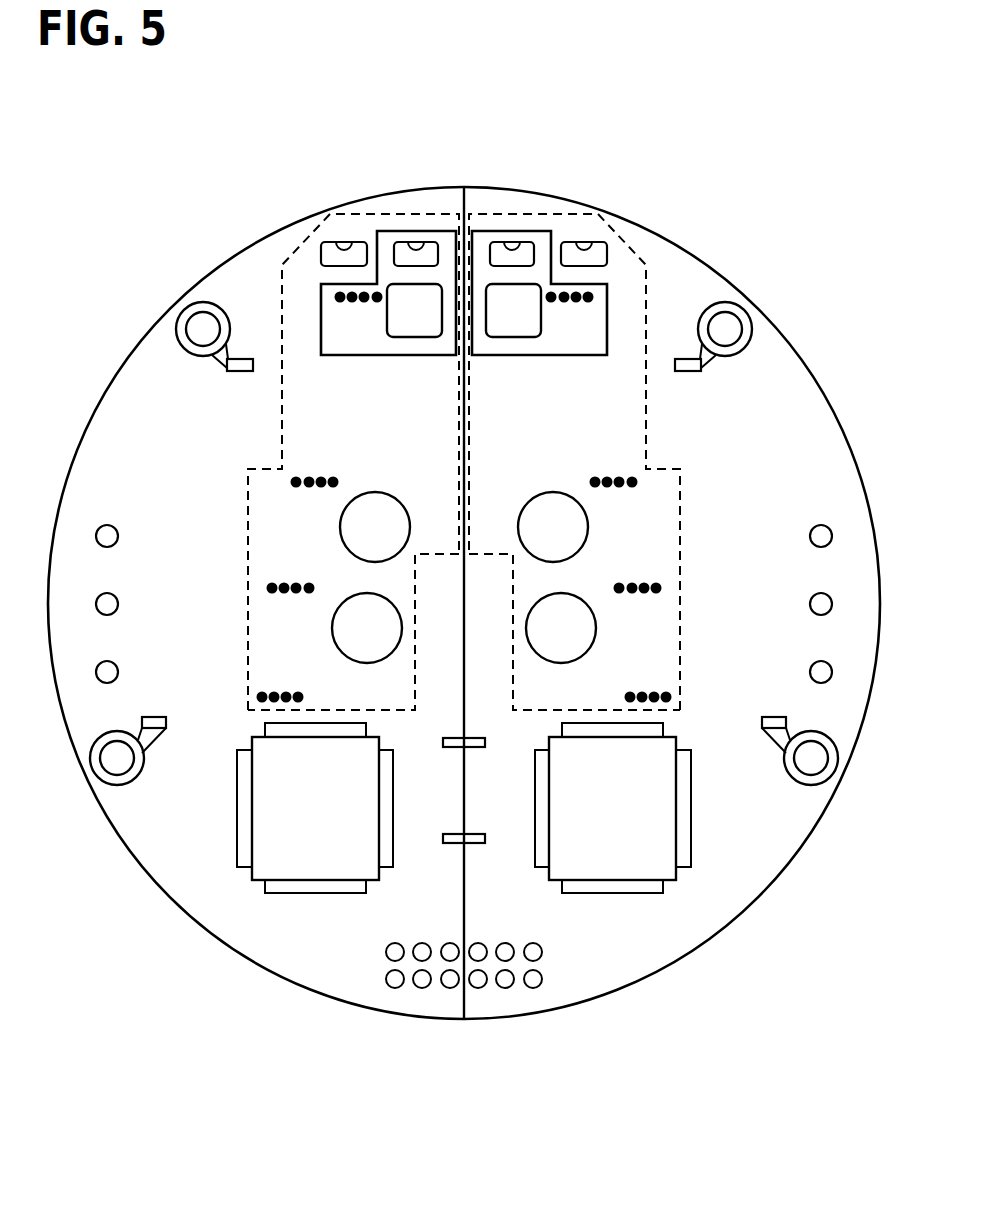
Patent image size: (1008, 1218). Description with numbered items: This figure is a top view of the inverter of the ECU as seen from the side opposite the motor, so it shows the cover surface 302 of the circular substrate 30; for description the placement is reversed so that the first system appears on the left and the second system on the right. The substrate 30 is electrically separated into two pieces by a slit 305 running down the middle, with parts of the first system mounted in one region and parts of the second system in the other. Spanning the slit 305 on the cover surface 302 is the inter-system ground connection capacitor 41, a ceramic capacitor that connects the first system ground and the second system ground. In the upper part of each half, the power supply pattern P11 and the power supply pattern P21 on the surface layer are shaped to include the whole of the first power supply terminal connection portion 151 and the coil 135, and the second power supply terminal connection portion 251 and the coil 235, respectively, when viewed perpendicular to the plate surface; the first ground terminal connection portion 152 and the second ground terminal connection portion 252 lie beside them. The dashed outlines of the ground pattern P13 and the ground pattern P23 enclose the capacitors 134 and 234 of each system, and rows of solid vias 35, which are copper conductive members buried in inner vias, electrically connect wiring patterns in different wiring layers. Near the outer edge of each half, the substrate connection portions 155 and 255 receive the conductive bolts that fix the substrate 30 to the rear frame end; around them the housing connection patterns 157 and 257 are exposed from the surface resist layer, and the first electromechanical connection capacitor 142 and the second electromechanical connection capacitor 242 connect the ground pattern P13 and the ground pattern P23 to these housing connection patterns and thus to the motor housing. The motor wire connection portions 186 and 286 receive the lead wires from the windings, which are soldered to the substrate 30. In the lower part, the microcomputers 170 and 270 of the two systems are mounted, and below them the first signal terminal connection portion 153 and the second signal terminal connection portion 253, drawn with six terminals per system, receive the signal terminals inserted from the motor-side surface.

The substrate 30 is at (218, 1008).
The cover surface 302 is at (318, 966).
The slit 305 is at (463, 862).
The inter-system ground connection capacitor 41 is at (474, 748).
The solid via 35 is at (338, 298).
The capacitor 134 is at (340, 527).
The capacitor 234 is at (588, 527).
The coil 135 is at (413, 323).
The coil 235 is at (515, 323).
The first electromechanical connection capacitor 142 is at (232, 371).
The second electromechanical connection capacitor 242 is at (696, 371).
The first power supply terminal connection portion 151 is at (416, 248).
The second power supply terminal connection portion 251 is at (512, 248).
The first ground terminal connection portion 152 is at (344, 248).
The second ground terminal connection portion 252 is at (584, 248).
The first signal terminal connection portion 153 is at (428, 977).
The second signal terminal connection portion 253 is at (500, 977).
The substrate connection portion 155 is at (196, 333).
The substrate connection portion 255 is at (732, 333).
The housing connection pattern 157 is at (200, 305).
The housing connection pattern 257 is at (728, 305).
The microcomputer 170 is at (258, 873).
The microcomputer 270 is at (670, 873).
The motor wire connection portion 186 is at (100, 606).
The motor wire connection portion 286 is at (828, 606).
The power supply pattern P11 is at (343, 340).
The power supply pattern P21 is at (585, 340).
The ground pattern P13 is at (248, 497).
The ground pattern P23 is at (680, 497).